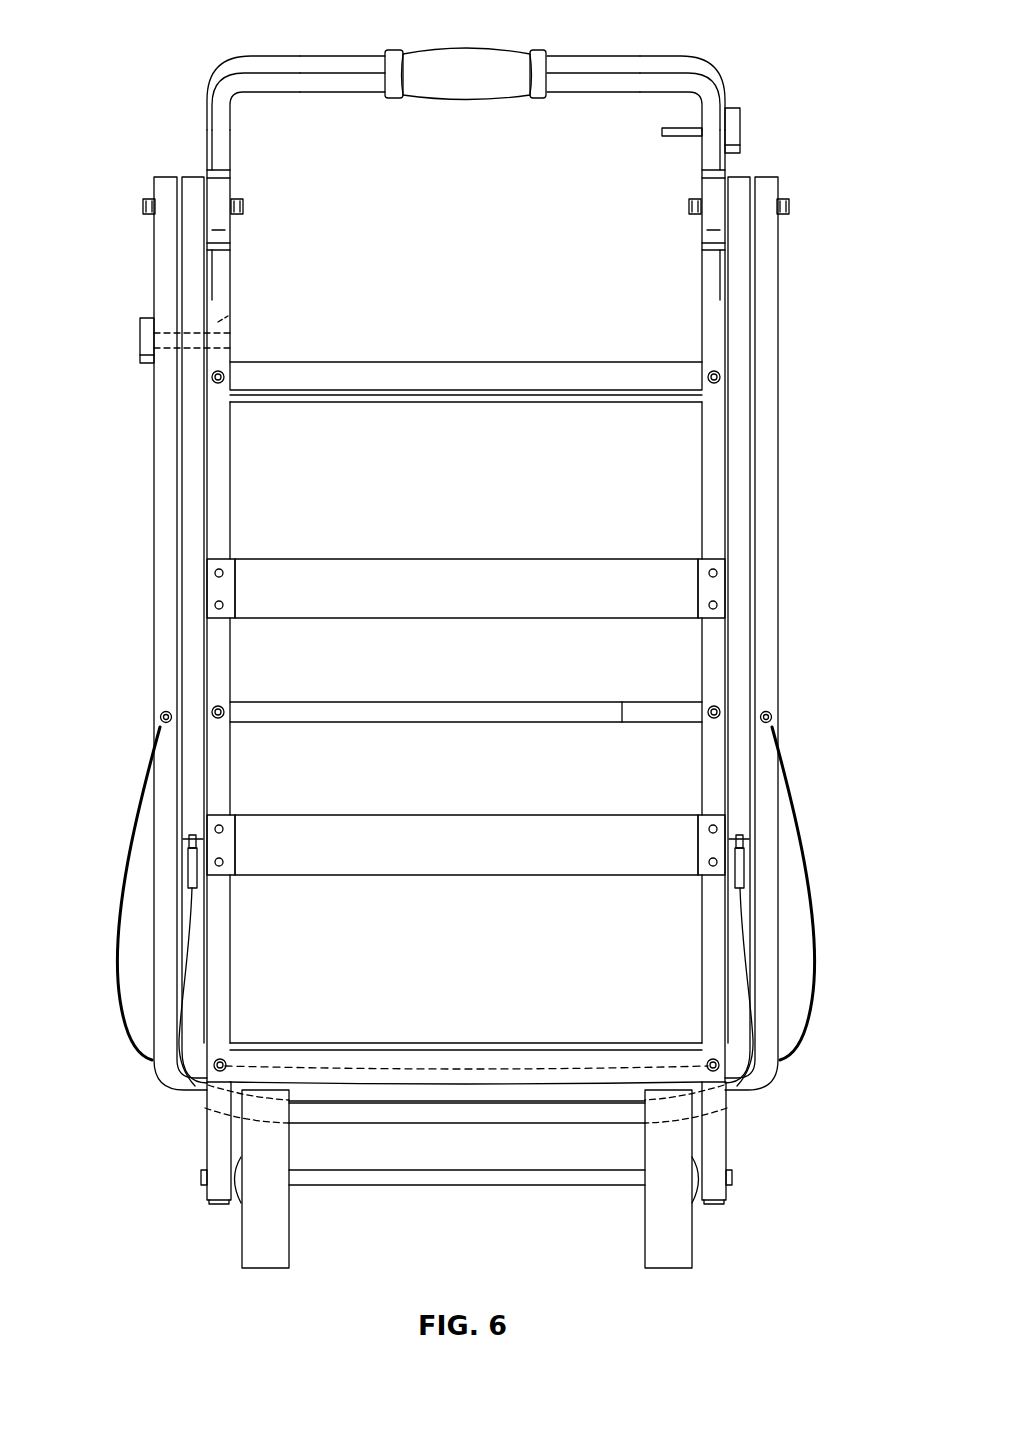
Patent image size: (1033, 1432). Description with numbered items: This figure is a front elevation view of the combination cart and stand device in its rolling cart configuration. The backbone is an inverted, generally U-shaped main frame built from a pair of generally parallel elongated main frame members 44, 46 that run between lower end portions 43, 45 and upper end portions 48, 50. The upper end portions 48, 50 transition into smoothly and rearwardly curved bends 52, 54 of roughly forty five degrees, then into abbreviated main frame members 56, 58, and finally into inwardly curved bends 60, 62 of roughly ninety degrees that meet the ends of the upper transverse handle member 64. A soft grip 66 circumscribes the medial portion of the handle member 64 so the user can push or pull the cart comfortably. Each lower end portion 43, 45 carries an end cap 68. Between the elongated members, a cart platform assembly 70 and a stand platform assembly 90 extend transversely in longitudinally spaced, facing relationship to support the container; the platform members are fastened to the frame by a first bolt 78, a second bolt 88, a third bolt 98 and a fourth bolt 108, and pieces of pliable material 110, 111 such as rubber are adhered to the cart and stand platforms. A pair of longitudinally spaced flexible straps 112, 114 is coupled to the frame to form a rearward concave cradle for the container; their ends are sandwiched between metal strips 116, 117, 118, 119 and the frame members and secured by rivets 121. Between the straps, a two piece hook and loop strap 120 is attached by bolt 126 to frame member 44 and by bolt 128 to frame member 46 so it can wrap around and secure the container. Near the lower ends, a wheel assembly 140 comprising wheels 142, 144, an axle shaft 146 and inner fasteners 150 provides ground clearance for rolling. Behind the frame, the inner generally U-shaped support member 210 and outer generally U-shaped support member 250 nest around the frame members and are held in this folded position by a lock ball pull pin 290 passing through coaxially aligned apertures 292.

The inwardly curved bend 60 is at (232, 85).
The abbreviated main frame member 56 is at (218, 140).
The upper transverse handle member 64 is at (618, 62).
The inwardly curved bend 62 is at (693, 77).
The abbreviated main frame member 58 is at (713, 112).
The soft grip 66 is at (478, 58).
The lock ball pull pin 290 is at (140, 340).
The rearwardly curved bend 52 is at (220, 195).
The rearwardly curved bend 54 is at (715, 197).
The inner generally U-shaped support member 210 is at (183, 244).
The outer generally U-shaped support member 250 is at (155, 307).
The upper end portion 48 is at (220, 253).
The upper end portion 50 is at (706, 285).
The coaxially aligned apertures 292 is at (212, 334).
The stand platform assembly 90 is at (504, 342).
The fourth bolt 108 is at (221, 384).
The piece of pliable material 111 is at (435, 402).
The third bolt 98 is at (712, 387).
The elongated main frame member 44 is at (244, 482).
The elongated main frame member 46 is at (690, 479).
The rivets 121 is at (219, 567).
The flexible strap 112 is at (392, 573).
The metal strip 116 is at (227, 595).
The right end plate 118 is at (706, 594).
The two piece hook and loop strap 120 is at (466, 687).
The bolt 126 is at (222, 722).
The bolt 128 is at (714, 724).
The flexible strap 114 is at (432, 830).
The metal strip 117 is at (227, 850).
The metal strip 119 is at (706, 850).
The piece of pliable material 110 is at (320, 1043).
The cart platform assembly 70 is at (446, 1022).
The second bolt 88 is at (225, 1075).
The first bolt 78 is at (720, 1072).
The lower end portion 43 is at (217, 1135).
The lower end portion 45 is at (717, 1135).
The inner fastener 150 is at (200, 1177).
The end cap 68 is at (222, 1202).
The wheel 142 is at (242, 1253).
The axle shaft 146 is at (398, 1180).
The wheel 144 is at (645, 1227).
The wheel assembly 140 is at (472, 1232).